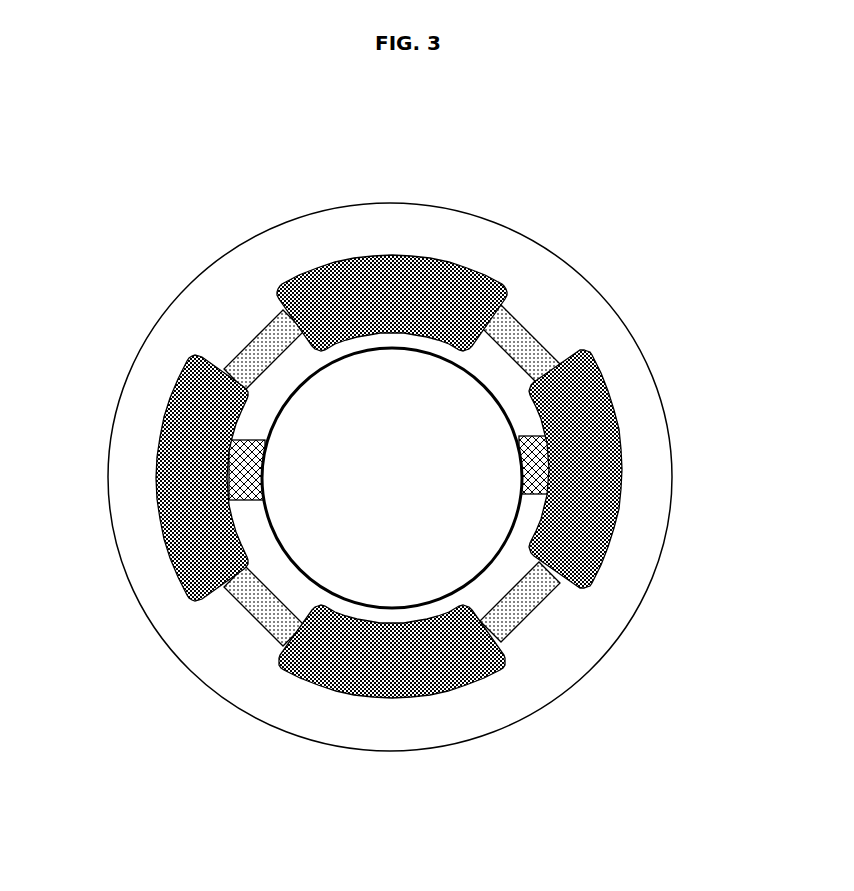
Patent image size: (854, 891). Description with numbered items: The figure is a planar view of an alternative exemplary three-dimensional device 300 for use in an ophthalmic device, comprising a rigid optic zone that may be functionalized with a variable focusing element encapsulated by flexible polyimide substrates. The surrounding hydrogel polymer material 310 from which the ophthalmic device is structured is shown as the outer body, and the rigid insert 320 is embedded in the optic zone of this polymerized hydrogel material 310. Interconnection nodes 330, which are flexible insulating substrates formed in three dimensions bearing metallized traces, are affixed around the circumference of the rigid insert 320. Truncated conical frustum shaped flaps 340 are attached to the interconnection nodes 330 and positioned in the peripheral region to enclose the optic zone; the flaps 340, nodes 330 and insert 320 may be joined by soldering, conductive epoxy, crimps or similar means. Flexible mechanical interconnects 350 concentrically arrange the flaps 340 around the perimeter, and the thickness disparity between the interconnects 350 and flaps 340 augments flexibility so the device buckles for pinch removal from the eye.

The three-dimensional device 300 is at (72, 86).
The hydrogel polymer material 310 is at (386, 222).
The rigid insert 320 is at (404, 508).
The interconnection nodes 330 is at (521, 421).
The truncated conical frustum shaped flaps 340 is at (634, 493).
The flexible mechanical interconnects 350 is at (243, 331).